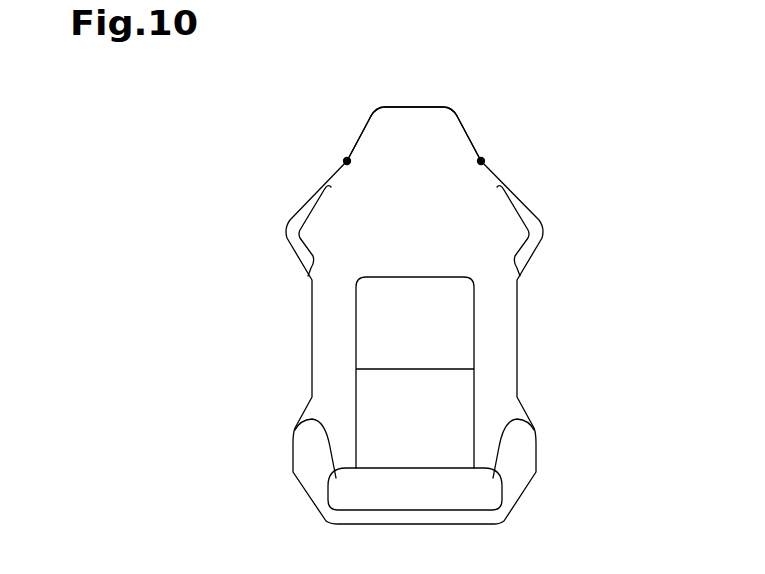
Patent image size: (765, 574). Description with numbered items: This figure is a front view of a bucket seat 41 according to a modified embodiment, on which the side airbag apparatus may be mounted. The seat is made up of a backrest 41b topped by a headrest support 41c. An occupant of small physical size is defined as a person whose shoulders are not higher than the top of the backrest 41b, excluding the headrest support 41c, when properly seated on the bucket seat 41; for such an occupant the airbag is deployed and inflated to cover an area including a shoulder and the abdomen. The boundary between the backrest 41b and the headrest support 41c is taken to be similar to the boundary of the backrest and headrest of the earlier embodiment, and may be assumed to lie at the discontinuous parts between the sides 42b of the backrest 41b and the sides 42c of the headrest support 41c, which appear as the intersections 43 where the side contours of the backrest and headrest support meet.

The bucket seat 41 is at (263, 480).
The backrest 41b is at (508, 329).
The headrest support 41c is at (417, 113).
The sides of the backrest 42b is at (301, 207).
The sides of the headrest support 42c is at (363, 128).
The intersections 43 is at (347, 161).